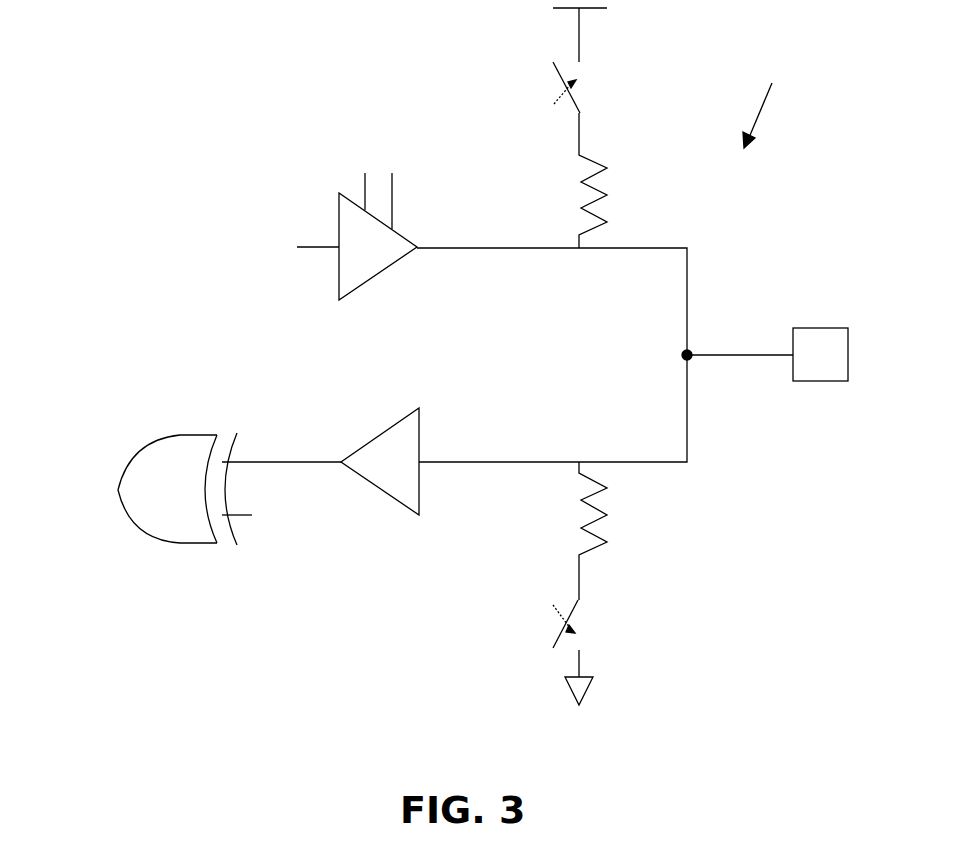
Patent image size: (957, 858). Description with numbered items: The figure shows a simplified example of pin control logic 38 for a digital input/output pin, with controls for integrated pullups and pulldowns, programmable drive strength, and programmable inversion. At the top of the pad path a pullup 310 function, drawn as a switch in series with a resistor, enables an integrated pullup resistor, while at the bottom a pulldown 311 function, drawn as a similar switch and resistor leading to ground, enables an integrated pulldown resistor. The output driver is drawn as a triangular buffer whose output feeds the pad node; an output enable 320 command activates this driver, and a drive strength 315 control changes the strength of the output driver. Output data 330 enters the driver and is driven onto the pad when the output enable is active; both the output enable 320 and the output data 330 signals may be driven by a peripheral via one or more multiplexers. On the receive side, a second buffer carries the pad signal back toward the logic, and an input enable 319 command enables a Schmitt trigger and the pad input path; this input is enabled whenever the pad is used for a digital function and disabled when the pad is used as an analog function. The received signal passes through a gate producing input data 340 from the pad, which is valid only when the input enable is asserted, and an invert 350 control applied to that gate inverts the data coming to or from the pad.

The sensing circuit 38 is at (764, 98).
The pullup 310 is at (541, 87).
The pulldown 311 is at (540, 624).
The drive strength 315 is at (412, 188).
The input enable 319 is at (392, 498).
The output enable 320 is at (345, 179).
The output data 330 is at (291, 248).
The input data 340 is at (118, 490).
The invert 350 is at (258, 518).